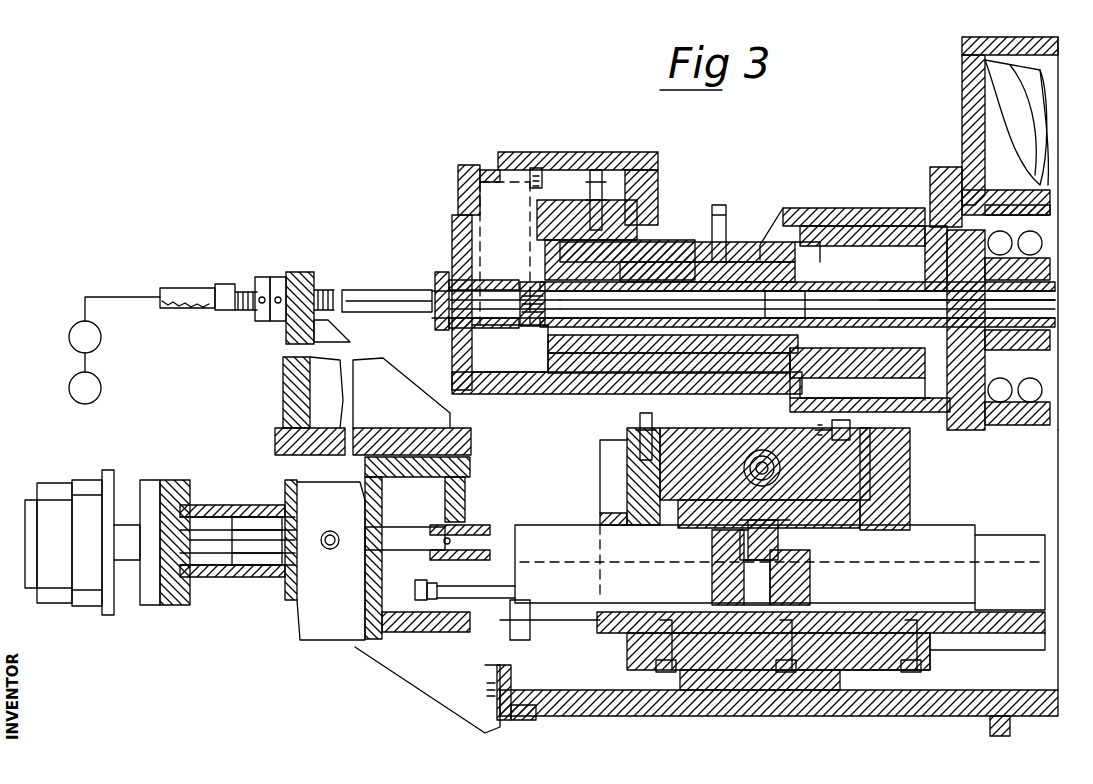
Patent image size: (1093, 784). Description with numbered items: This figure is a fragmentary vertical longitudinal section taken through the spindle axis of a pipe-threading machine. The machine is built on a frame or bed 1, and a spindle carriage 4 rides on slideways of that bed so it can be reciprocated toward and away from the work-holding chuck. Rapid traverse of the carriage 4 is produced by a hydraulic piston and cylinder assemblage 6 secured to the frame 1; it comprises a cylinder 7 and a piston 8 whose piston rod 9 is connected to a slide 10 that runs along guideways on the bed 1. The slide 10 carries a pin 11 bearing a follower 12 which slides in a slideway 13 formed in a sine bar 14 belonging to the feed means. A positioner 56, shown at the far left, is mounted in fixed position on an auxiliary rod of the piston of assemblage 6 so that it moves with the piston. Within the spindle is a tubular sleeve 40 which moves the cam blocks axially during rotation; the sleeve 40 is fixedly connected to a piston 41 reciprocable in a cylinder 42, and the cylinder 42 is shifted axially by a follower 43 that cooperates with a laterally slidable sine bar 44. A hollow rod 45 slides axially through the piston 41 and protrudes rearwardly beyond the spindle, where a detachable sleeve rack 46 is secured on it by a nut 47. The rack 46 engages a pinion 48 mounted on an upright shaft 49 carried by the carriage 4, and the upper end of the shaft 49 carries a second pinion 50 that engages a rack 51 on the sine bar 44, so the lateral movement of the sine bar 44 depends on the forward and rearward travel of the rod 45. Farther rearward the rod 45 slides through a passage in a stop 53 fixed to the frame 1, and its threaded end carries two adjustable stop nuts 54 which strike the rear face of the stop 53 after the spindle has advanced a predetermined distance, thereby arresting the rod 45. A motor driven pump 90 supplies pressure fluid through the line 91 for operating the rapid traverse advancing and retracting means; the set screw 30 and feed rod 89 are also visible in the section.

The frame or bed 1 is at (1025, 692).
The spindle carriage 4 is at (962, 102).
The hydraulic piston and cylinder assemblage 6 is at (168, 490).
The cylinder 7 is at (250, 505).
The piston 8 is at (256, 570).
The piston rod 9 is at (395, 534).
The slide 10 is at (780, 567).
The pin 11 is at (810, 565).
The follower 12 is at (720, 530).
The slideway 13 is at (705, 470).
The sine bar 14 is at (660, 470).
The adjusting screw 30 is at (832, 423).
The tubular sleeve 40 is at (895, 283).
The piston 41 is at (690, 262).
The cylinder 42 is at (660, 242).
The follower 43 is at (605, 170).
The sine bar 44 is at (537, 218).
The hollow rod 45 is at (743, 304).
The sleeve rack 46 is at (533, 284).
The nut 47 is at (442, 272).
The pinion 48 is at (500, 340).
The upright shaft 49 is at (452, 240).
The pinion 50 is at (458, 184).
The rack 51 is at (570, 170).
The stop 53 is at (306, 272).
The adjustable stop nuts 54 is at (262, 277).
The positioner 56 is at (55, 487).
The feed rod 89 is at (462, 310).
The motor driven pump 90 is at (69, 339).
The line 91 is at (386, 312).